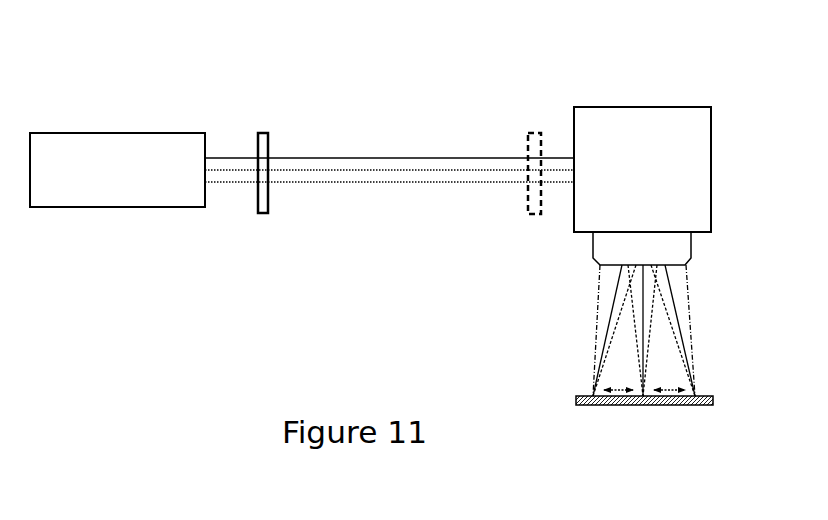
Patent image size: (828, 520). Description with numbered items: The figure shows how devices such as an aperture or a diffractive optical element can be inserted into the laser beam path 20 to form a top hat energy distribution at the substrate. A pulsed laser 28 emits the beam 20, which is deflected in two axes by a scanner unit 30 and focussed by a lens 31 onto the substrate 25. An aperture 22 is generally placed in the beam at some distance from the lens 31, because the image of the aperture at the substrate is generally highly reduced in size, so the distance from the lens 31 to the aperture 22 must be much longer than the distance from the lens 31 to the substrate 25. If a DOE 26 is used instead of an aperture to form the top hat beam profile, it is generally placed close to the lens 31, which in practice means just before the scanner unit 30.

The pulsed laser 28 is at (117, 213).
The laser beam 20 is at (378, 158).
The aperture 22 is at (257, 125).
The DOE 26 is at (525, 145).
The scanner unit 30 is at (650, 104).
The lens 31 is at (592, 254).
The substrate 25 is at (571, 392).